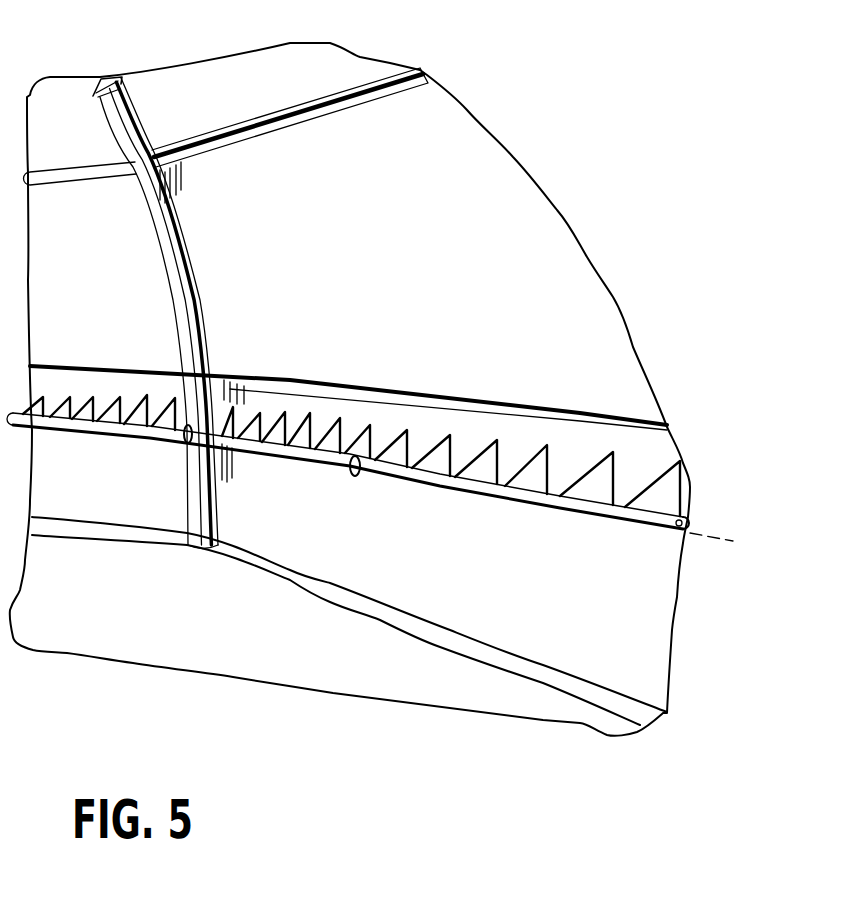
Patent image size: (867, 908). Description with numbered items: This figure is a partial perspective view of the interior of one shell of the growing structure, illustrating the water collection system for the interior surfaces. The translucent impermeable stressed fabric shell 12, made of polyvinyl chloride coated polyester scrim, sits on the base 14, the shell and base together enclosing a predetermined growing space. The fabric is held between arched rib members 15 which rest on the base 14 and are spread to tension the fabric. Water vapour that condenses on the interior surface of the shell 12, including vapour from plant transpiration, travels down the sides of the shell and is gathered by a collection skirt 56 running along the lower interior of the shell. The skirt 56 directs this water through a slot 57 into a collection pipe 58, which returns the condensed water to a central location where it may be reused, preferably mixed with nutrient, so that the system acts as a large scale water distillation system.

The shell 12 is at (513, 240).
The base 14 is at (140, 618).
The arched rib member 15 is at (147, 108).
The collection skirt 56 is at (570, 467).
The slot 57 is at (616, 506).
The collection pipe 58 is at (502, 497).